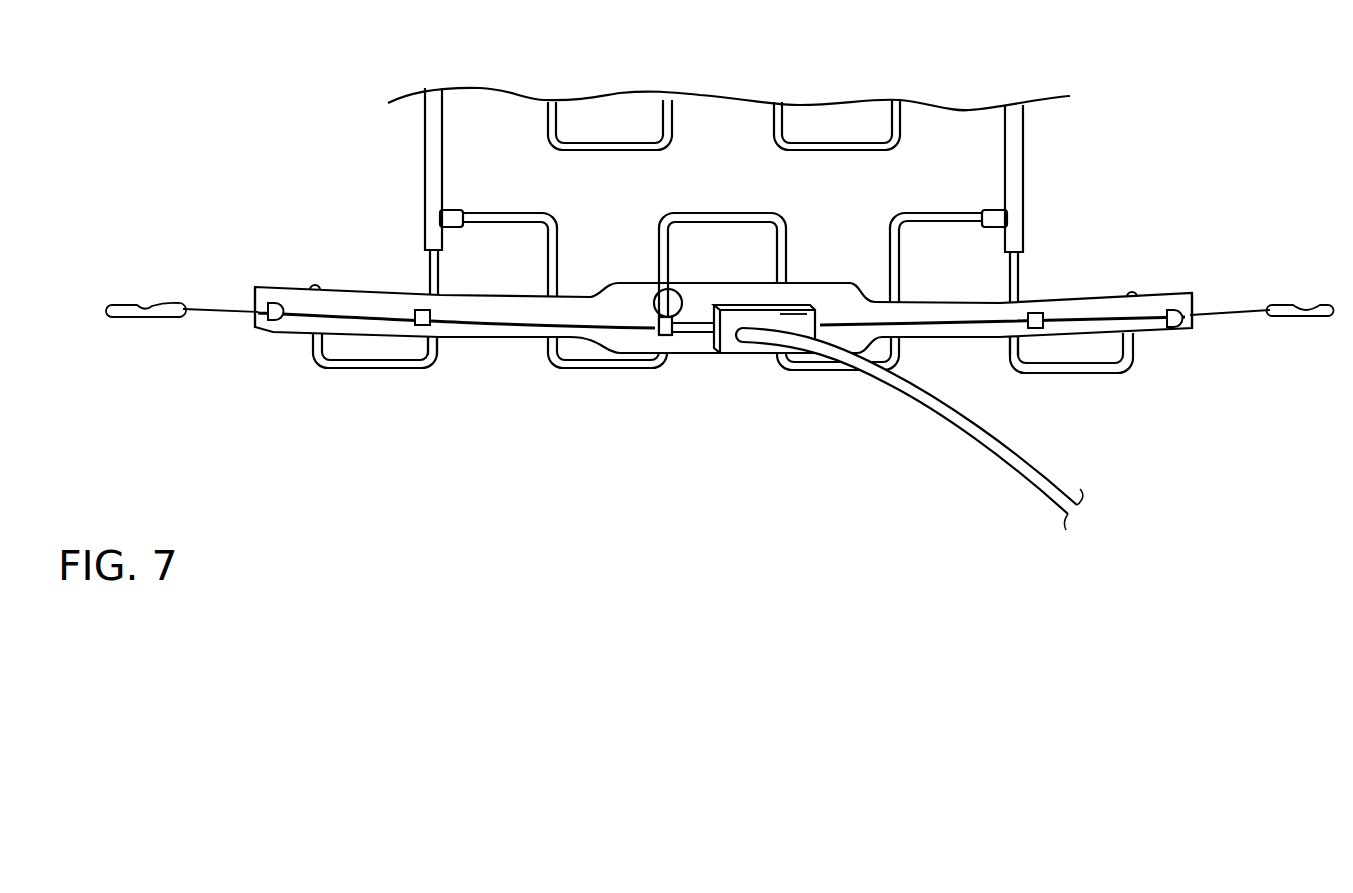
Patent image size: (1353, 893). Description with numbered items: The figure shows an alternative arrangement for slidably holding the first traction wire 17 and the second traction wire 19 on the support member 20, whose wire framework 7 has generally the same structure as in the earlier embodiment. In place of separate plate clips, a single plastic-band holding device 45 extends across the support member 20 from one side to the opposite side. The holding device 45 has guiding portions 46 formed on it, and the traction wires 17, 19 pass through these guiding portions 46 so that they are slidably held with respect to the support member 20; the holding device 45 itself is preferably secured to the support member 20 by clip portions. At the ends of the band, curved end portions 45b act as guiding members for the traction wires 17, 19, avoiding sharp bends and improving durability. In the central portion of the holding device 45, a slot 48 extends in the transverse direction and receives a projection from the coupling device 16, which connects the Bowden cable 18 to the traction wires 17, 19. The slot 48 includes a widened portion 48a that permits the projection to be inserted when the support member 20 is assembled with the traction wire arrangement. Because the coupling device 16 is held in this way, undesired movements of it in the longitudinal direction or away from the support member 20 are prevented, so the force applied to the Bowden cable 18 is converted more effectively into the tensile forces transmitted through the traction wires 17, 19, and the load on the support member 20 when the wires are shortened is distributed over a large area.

The support member 20 is at (683, 202).
The frame tube 7 is at (618, 147).
The plastic-band holding device 45 is at (500, 337).
The curved end portions 45b is at (273, 293).
The guiding portions 46 is at (275, 320).
The slot 48 is at (690, 331).
The widened portion 48a is at (656, 302).
The coupling device 16 is at (743, 347).
The Bowden cable 18 is at (984, 436).
The second traction wire 19 is at (225, 313).
The first traction wire 17 is at (1237, 315).